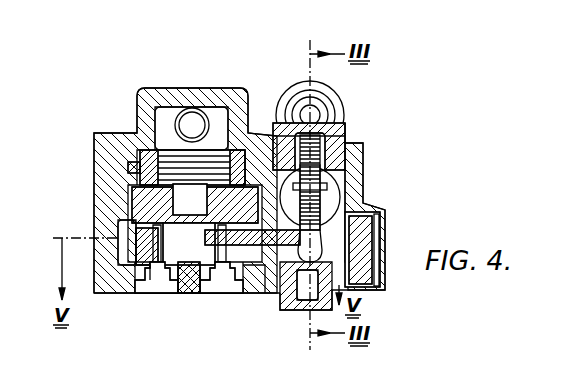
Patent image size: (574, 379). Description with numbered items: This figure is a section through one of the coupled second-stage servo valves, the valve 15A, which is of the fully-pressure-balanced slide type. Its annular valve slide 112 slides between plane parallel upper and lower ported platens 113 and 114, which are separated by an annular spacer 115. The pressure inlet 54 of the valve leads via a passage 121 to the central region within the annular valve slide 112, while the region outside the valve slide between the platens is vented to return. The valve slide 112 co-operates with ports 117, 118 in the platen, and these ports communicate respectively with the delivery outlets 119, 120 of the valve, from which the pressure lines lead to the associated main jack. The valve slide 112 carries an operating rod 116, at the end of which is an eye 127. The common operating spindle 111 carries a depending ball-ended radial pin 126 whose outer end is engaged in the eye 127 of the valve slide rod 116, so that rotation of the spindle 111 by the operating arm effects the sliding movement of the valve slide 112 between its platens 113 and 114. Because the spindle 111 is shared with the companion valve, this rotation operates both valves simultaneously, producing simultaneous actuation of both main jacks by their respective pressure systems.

The pressure inlet 54 is at (190, 118).
The upper ported platen 113 is at (247, 196).
The second-stage servo valve 15A is at (140, 213).
The annular spacer 115 is at (130, 228).
The passage 121 is at (205, 210).
The port 117 is at (161, 268).
The annular valve slide 112 is at (132, 268).
The delivery outlet 119 is at (152, 296).
The lower ported platen 114 is at (187, 285).
The delivery outlet 120 is at (210, 296).
The port 118 is at (225, 270).
The operating rod 116 is at (265, 270).
The operating spindle 111 is at (325, 193).
The ball-ended radial pin 126 is at (322, 208).
The eye 127 is at (325, 239).